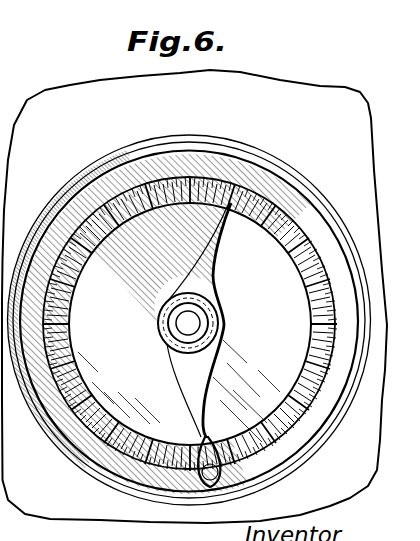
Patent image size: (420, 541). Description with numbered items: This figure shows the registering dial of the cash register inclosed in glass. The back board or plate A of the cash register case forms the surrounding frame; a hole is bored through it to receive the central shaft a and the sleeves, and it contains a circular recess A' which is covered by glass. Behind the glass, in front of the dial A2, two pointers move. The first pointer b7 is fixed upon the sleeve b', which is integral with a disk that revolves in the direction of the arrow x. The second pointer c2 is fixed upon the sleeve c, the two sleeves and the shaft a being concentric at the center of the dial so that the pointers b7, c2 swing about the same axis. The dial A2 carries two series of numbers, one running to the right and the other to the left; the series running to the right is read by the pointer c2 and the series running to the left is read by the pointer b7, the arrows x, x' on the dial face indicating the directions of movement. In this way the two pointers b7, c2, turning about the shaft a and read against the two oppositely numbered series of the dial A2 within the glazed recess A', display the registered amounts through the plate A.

The back board or plate A is at (194, 296).
The dial A2 is at (158, 182).
The circular recess A' is at (189, 320).
The central shaft a is at (200, 322).
The sleeve b' is at (178, 323).
The pointer b7 is at (212, 265).
The sleeve c is at (189, 206).
The pointer c2 is at (197, 382).
The arrow x is at (183, 238).
The arrow x' is at (172, 406).